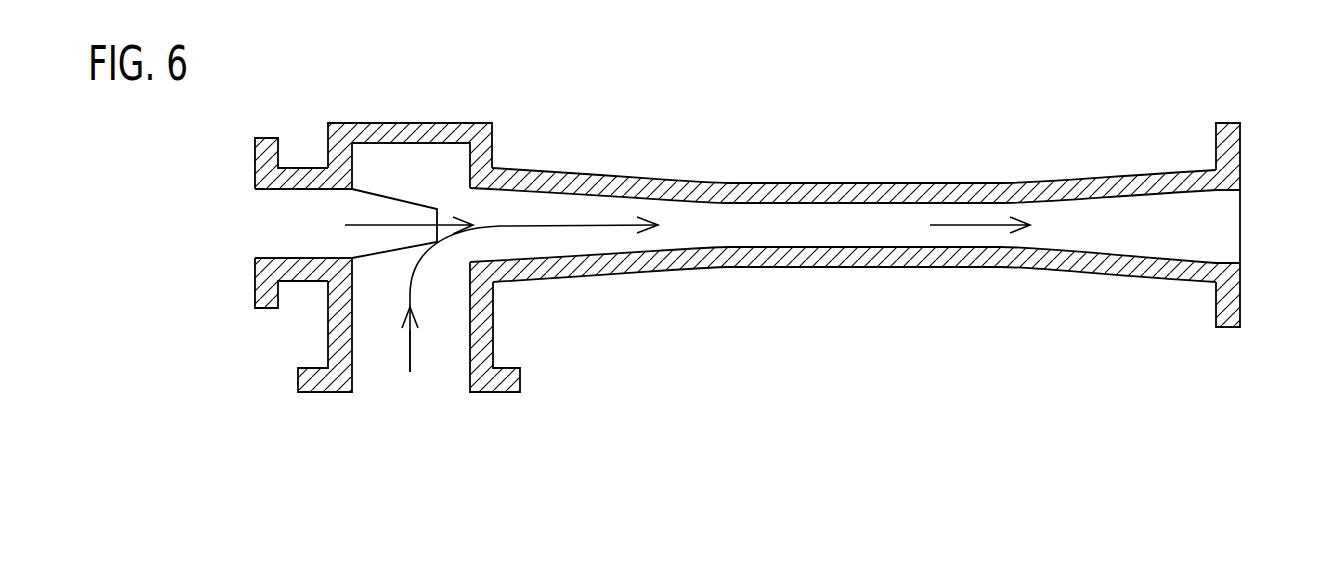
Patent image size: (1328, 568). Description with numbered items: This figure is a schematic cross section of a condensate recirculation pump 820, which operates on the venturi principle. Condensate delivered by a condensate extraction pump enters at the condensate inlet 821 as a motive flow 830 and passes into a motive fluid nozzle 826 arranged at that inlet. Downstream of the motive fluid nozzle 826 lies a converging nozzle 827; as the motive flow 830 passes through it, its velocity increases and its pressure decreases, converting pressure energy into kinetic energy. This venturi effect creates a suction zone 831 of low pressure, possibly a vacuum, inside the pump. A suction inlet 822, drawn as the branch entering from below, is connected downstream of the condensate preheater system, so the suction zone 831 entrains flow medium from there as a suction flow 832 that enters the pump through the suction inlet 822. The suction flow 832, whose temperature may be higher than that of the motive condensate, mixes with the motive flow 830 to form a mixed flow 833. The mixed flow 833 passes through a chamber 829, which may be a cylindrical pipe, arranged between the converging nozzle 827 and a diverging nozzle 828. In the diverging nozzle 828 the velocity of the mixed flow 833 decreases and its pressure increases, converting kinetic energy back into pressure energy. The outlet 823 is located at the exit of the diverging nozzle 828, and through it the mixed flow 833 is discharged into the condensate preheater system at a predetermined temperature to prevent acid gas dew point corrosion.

The condensate recirculation pump 820 is at (988, 85).
The condensate inlet 821 is at (255, 223).
The suction inlet 822 is at (410, 392).
The outlet 823 is at (1240, 220).
The motive fluid nozzle 826 is at (393, 200).
The converging nozzle 827 is at (540, 170).
The diverging nozzle 828 is at (1138, 174).
The chamber 829 is at (855, 183).
The motive flow 830 is at (378, 223).
The suction zone 831 is at (430, 273).
The suction flow 832 is at (410, 349).
The mixed flow 833 is at (972, 227).